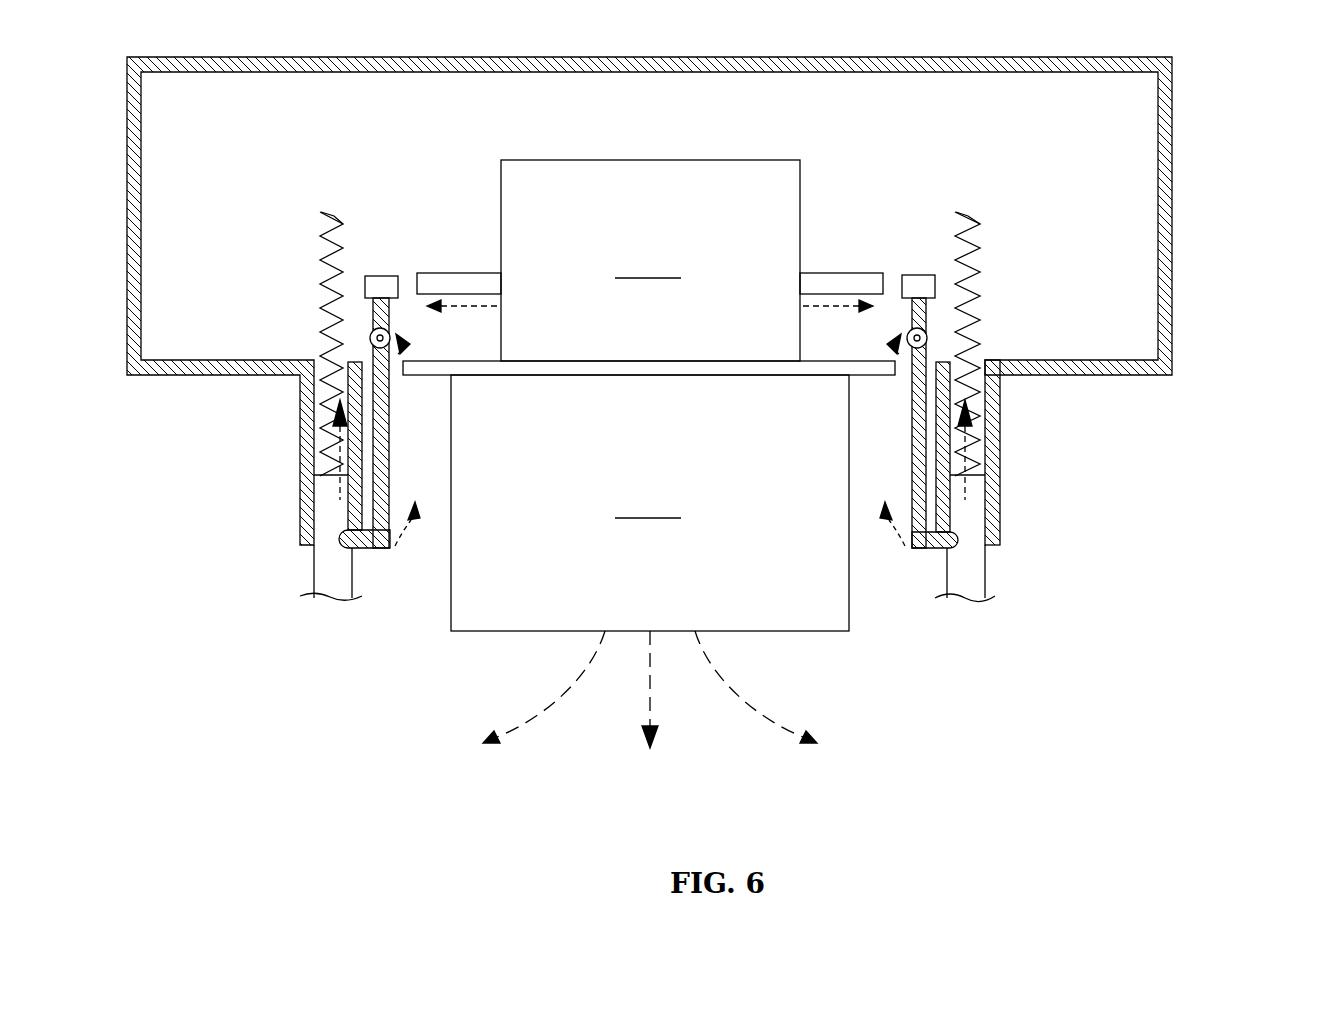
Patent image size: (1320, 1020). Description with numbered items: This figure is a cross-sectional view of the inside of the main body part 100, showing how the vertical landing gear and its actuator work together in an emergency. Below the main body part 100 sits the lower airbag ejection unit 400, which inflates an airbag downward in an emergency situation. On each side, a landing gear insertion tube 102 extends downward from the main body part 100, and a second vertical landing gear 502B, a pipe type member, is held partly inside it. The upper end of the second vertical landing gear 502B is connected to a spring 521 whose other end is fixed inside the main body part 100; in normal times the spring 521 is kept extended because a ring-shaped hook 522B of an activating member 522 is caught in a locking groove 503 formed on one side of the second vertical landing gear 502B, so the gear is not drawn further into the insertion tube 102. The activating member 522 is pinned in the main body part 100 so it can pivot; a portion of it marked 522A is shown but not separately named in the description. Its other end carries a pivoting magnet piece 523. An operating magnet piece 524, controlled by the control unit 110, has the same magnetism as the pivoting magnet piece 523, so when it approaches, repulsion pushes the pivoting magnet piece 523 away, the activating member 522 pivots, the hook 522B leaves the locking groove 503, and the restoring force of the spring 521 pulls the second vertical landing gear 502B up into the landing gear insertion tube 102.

The main body part 100 is at (1170, 128).
The landing gear insertion tube 102 is at (1000, 478).
The control unit 110 is at (649, 267).
The lower airbag ejection unit 400 is at (650, 561).
The locking groove 503 is at (950, 528).
The second vertical landing gear 502B is at (965, 572).
The spring 521 is at (975, 280).
The activating member 522 is at (385, 497).
The first lever arm 522A is at (372, 337).
The hook 522B is at (928, 560).
The pivoting magnet piece 523 is at (920, 278).
The operating magnet piece 524 is at (830, 282).